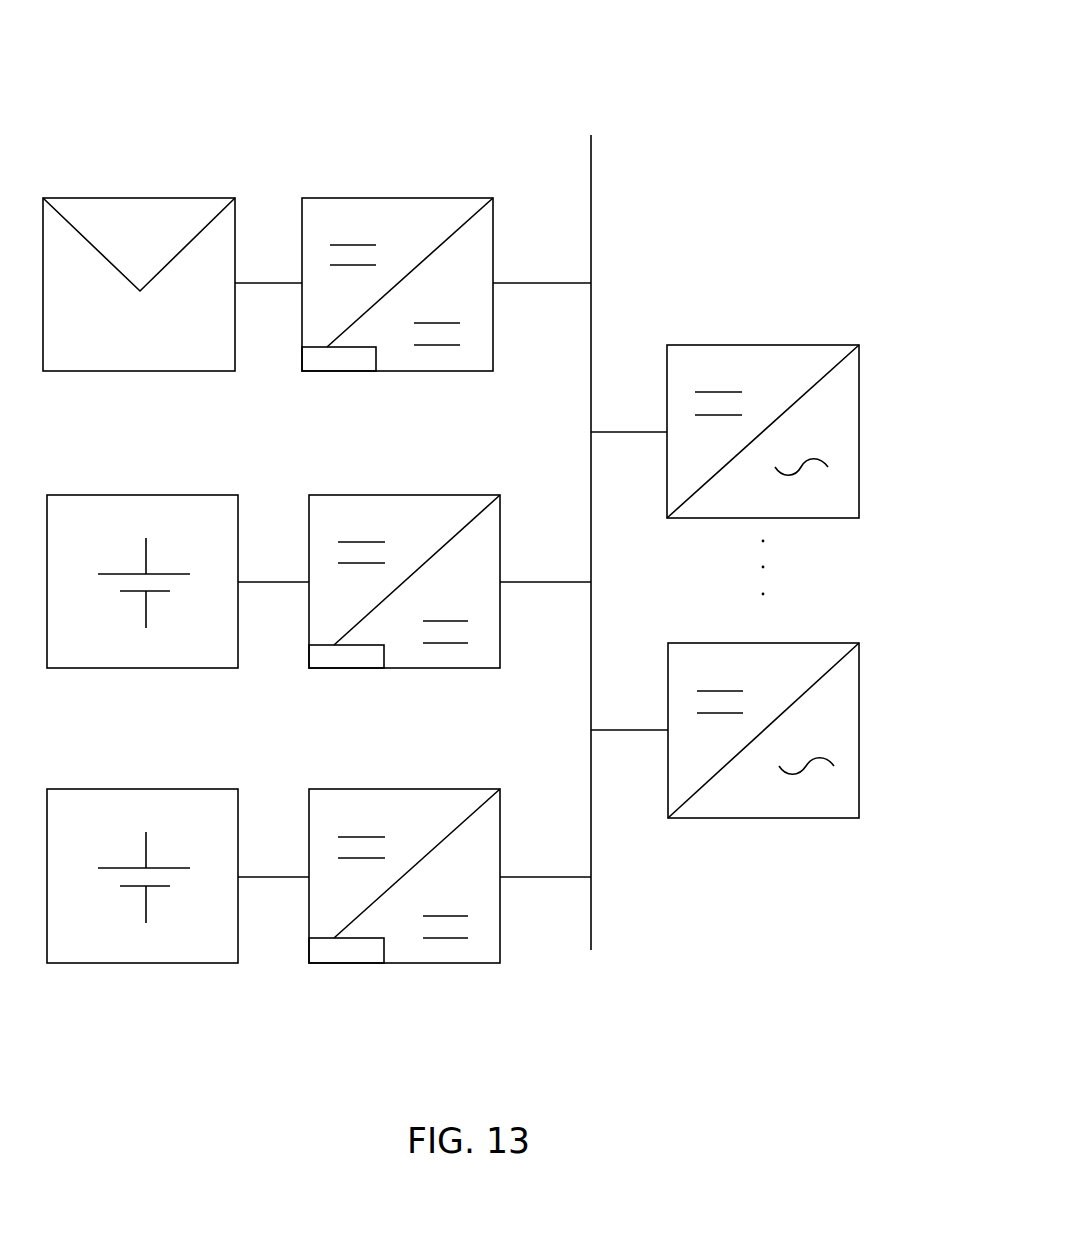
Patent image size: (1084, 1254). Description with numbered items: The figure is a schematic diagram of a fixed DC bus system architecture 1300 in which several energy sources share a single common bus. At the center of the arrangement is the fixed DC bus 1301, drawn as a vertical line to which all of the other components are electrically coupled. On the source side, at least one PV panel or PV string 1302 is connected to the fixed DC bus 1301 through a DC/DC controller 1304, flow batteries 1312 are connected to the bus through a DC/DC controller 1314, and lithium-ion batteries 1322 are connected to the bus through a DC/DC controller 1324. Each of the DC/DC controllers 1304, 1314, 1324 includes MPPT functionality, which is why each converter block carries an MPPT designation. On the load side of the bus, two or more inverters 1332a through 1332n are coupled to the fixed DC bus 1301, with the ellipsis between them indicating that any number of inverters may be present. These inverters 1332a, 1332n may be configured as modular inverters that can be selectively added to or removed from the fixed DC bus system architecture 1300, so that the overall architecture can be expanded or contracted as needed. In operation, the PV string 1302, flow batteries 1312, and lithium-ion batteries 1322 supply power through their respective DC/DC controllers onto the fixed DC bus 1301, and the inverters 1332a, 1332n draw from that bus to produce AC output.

The fixed DC bus system architecture 1300 is at (142, 46).
The fixed DC bus 1301 is at (591, 213).
The PV panel or PV string 1302 is at (138, 371).
The DC/DC controller 1304 is at (447, 196).
The flow batteries 1312 is at (207, 494).
The DC/DC controller 1314 is at (470, 494).
The lithium-ion batteries 1322 is at (143, 963).
The DC/DC controller 1324 is at (470, 789).
The inverter 1332a is at (859, 432).
The inverter 1332n is at (762, 818).